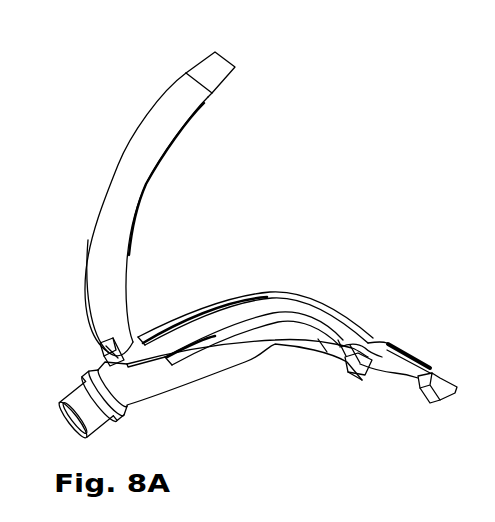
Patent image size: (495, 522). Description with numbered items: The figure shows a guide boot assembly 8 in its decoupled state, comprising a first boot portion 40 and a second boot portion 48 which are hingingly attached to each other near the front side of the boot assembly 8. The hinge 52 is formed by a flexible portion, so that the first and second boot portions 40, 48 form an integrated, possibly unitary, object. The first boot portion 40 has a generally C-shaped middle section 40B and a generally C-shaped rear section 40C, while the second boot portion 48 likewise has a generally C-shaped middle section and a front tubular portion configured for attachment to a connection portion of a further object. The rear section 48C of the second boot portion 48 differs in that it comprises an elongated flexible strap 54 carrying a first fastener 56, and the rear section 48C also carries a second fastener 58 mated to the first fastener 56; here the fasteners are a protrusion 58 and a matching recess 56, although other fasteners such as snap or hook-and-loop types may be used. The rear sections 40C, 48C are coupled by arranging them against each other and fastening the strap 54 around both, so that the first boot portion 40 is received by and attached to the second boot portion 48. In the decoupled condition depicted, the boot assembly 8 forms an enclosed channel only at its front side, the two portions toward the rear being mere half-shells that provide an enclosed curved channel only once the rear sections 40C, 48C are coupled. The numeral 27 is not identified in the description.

The guide boot assembly 8 is at (82, 97).
The first boot portion 40 is at (103, 192).
The middle section 40B is at (104, 248).
The rear section 40C is at (210, 69).
The hinge 52 is at (120, 363).
The elbow body 27 is at (289, 341).
The second boot portion 48 is at (228, 320).
The rear section 48C is at (373, 338).
The elongated flexible strap 54 is at (418, 356).
The first fastener 56 is at (427, 398).
The second fastener 58 is at (361, 378).